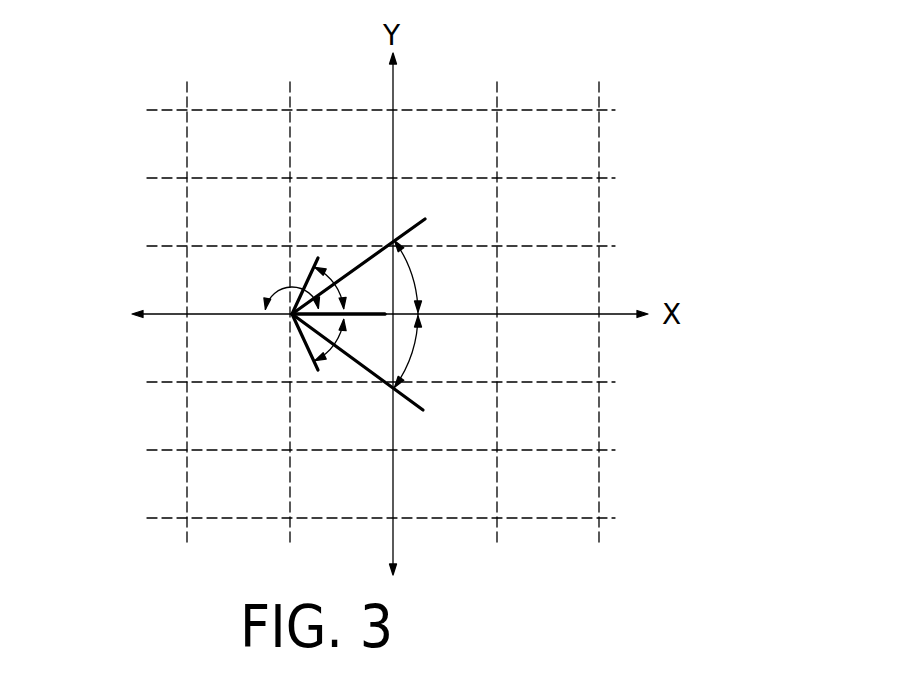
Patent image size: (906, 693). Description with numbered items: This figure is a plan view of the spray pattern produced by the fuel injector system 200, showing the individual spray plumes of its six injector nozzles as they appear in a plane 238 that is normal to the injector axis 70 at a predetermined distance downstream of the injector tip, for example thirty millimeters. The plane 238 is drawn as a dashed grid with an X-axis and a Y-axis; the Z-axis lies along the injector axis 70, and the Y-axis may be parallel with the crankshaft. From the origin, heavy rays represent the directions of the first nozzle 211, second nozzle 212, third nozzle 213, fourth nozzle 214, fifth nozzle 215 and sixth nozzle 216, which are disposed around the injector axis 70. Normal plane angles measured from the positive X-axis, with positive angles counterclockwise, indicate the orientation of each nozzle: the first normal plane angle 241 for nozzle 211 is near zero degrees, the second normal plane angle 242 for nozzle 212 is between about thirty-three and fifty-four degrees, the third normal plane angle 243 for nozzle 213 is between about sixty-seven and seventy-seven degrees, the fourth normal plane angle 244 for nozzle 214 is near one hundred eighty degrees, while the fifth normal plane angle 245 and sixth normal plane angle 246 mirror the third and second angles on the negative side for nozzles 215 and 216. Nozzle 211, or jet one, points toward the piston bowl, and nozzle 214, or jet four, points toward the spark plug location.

The fuel injector system 200 is at (88, 96).
The normal plane 238 is at (599, 148).
The fourth nozzle 214 is at (255, 314).
The injector axis 70 is at (450, 314).
The second nozzle 212 is at (413, 230).
The sixth nozzle 216 is at (415, 400).
The first normal plane angle 241 is at (362, 313).
The first nozzle 211 is at (385, 314).
The third nozzle 213 is at (306, 283).
The fifth nozzle 215 is at (307, 350).
The second normal plane angle 242 is at (413, 283).
The sixth normal plane angle 246 is at (417, 330).
The third normal plane angle 243 is at (336, 277).
The fifth normal plane angle 245 is at (330, 352).
The fourth normal plane angle 244 is at (301, 289).